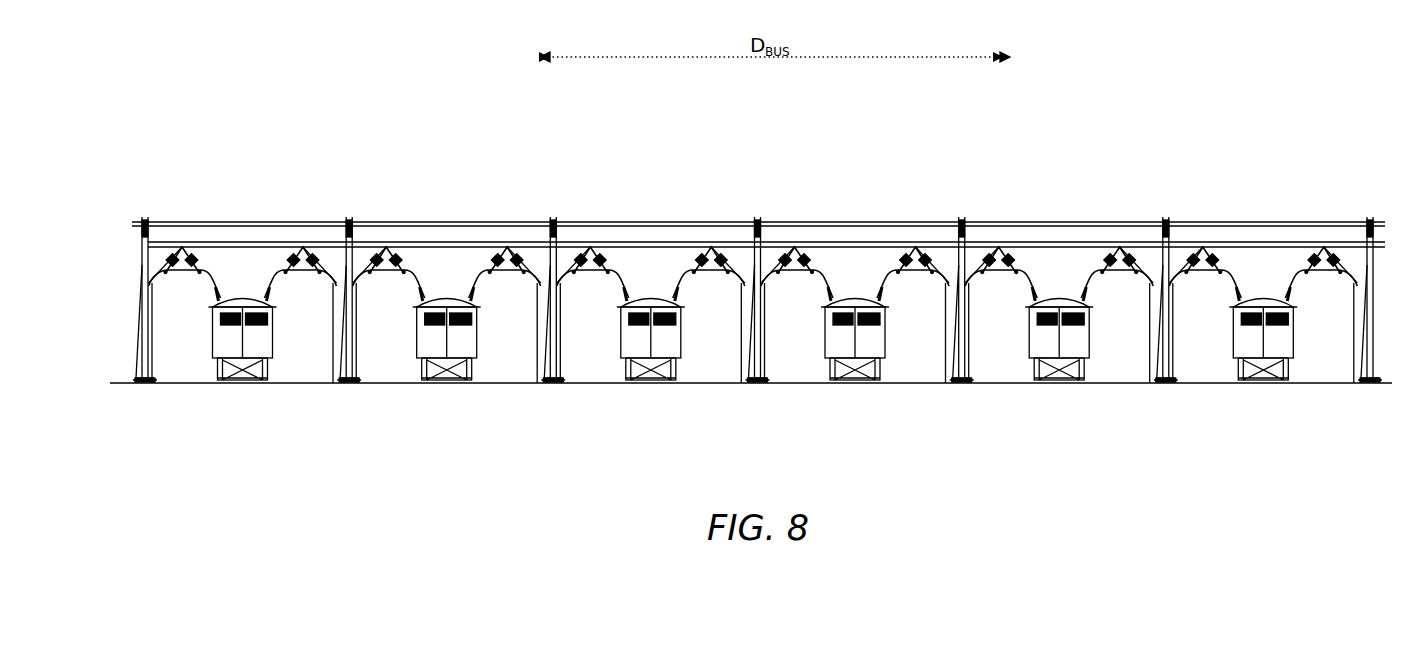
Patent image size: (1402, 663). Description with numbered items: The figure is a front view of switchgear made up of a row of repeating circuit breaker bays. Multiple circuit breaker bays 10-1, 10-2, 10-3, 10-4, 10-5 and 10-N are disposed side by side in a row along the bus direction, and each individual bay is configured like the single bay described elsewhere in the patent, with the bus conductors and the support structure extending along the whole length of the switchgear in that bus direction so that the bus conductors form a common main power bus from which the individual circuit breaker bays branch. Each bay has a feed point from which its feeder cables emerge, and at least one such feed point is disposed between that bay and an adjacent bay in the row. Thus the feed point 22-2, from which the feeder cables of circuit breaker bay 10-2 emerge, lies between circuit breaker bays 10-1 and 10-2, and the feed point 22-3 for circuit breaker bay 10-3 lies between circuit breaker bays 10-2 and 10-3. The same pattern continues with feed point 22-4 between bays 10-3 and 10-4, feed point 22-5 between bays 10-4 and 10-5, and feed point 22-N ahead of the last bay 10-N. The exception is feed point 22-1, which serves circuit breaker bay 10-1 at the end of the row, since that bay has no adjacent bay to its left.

The circuit breaker bay 10-1 is at (195, 191).
The circuit breaker bay 10-2 is at (420, 191).
The circuit breaker bay 10-3 is at (635, 193).
The circuit breaker bay 10-4 is at (835, 191).
The circuit breaker bay 10-5 is at (1061, 191).
The circuit breaker bay 10-N is at (1275, 191).
The feed point 22-1 is at (120, 380).
The feed point 22-2 is at (330, 382).
The feed point 22-3 is at (535, 382).
The feed point 22-4 is at (737, 382).
The feed point 22-5 is at (945, 381).
The feed point 22-N is at (1150, 382).